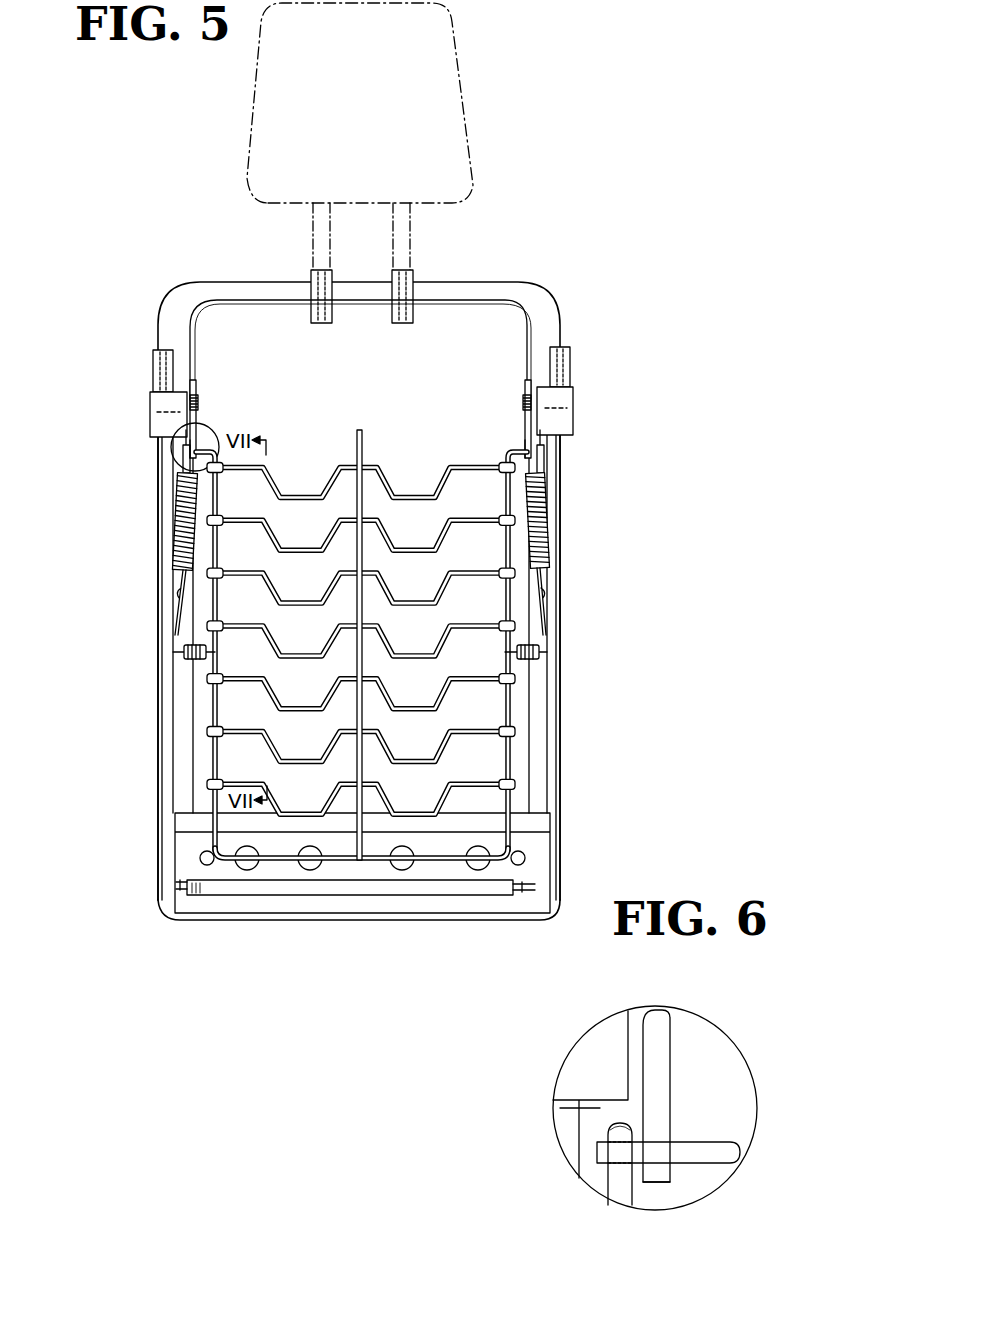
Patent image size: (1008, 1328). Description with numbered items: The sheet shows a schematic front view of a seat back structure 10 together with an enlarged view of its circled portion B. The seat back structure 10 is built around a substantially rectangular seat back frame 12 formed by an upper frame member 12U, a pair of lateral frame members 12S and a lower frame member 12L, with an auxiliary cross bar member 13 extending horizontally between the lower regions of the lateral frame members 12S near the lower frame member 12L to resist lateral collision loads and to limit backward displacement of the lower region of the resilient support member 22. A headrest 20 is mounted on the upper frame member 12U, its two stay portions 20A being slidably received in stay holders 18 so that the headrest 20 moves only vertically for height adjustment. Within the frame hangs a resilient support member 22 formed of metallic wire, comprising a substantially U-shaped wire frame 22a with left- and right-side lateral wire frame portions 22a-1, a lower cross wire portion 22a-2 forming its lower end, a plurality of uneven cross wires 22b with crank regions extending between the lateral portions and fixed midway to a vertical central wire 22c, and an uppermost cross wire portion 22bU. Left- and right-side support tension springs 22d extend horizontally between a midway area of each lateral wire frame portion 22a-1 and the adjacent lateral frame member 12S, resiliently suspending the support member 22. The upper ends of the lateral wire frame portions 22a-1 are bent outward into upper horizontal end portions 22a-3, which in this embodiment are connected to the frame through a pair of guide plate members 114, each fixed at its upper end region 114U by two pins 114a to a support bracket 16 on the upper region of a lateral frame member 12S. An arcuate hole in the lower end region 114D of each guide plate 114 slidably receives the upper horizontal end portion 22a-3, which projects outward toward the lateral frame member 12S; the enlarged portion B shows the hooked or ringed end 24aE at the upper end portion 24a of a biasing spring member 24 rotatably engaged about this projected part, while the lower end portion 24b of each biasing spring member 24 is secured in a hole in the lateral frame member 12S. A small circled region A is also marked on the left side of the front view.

In FIG. 5, the seat back structure 10 is at (592, 230).
In FIG. 5, the seat back frame 12 is at (140, 320).
In FIG. 5, the upper frame member 12U is at (208, 298).
In FIG. 5, the lateral frame member 12S is at (160, 622).
In FIG. 5, the lower frame member 12L is at (530, 848).
In FIG. 5, the auxiliary cross bar member 13 is at (340, 822).
In FIG. 5, the support bracket 16 is at (150, 415).
In FIG. 6, the support bracket 16 is at (600, 1063).
In FIG. 5, the stay holder 18 is at (318, 293).
In FIG. 5, the headrest 20 is at (458, 86).
In FIG. 5, the stay portion 20A is at (320, 228).
In FIG. 5, the resilient support member 22 is at (203, 702).
In FIG. 5, the wire frame 22a is at (516, 712).
In FIG. 5, the lateral wire frame portion 22a-1 is at (210, 775).
In FIG. 5, the lower cross wire portion 22a-2 is at (380, 865).
In FIG. 5, the upper horizontal end portion 22a-3 is at (224, 450).
In FIG. 6, the upper horizontal end portion 22a-3 is at (705, 1158).
In FIG. 5, the uneven cross wire 22b is at (395, 530).
In FIG. 5, the uppermost cross wire portion 22bU is at (330, 478).
In FIG. 5, the vertical central wire 22c is at (363, 430).
In FIG. 5, the support tension spring 22d is at (183, 654).
In FIG. 5, the biasing spring member 24 is at (176, 520).
In FIG. 5, the upper end portion of biasing spring member 24a is at (183, 470).
In FIG. 6, the upper end portion of biasing spring member 24a is at (615, 1178).
In FIG. 6, the hooked or ringed end 24aE is at (602, 1123).
In FIG. 5, the lower end portion of biasing spring member 24b is at (180, 597).
In FIG. 5, the guide plate member 114 is at (204, 424).
In FIG. 6, the guide plate member 114 is at (712, 1040).
In FIG. 5, the upper end region of guide plate member 114U is at (195, 395).
In FIG. 5, the pin 114a is at (200, 405).
In FIG. 5, the lower end region of guide plate member 114D is at (545, 462).
In FIG. 6, the lower end region of guide plate member 114D is at (665, 1103).
In FIG. 5, the detail region A is at (173, 452).
In FIG. 6, the circled portion B is at (553, 1080).